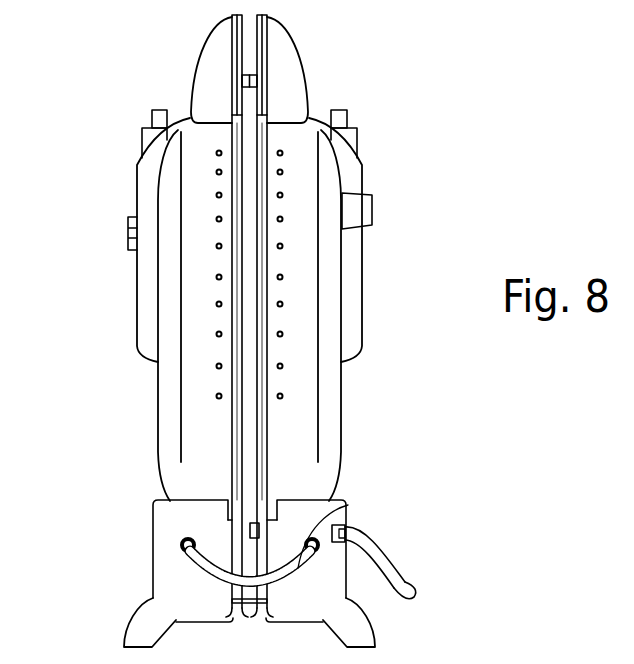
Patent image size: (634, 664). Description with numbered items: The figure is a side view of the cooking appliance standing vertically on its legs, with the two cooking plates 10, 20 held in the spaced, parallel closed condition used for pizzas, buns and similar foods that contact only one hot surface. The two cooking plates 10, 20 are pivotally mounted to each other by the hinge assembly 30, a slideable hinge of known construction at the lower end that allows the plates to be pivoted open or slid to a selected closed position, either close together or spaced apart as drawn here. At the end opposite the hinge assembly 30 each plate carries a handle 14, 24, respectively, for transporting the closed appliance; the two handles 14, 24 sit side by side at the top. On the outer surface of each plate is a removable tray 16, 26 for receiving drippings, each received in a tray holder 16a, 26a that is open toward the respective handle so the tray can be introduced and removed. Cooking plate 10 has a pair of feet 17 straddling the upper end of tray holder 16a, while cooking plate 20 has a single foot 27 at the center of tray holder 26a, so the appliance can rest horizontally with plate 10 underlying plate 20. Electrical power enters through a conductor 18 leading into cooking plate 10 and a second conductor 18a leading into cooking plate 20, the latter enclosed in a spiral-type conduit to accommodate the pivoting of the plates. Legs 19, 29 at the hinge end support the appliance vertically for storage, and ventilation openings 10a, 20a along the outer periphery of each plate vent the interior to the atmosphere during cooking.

The cooking plate 10 is at (347, 422).
The cooking plate 20 is at (151, 422).
The ventilation openings 10a is at (283, 305).
The ventilation openings 20a is at (216, 306).
The handle 14 is at (284, 60).
The handle 24 is at (208, 58).
The removable tray 16 is at (342, 112).
The removable tray 26 is at (150, 118).
The tray holder 16a is at (348, 143).
The tray holder 26a is at (143, 146).
The feet 17 is at (362, 213).
The foot 27 is at (128, 222).
The conductor 18 is at (420, 585).
The conductor 18a is at (348, 505).
The leg 19 is at (368, 633).
The leg 29 is at (128, 644).
The hinge assembly 30 is at (250, 609).